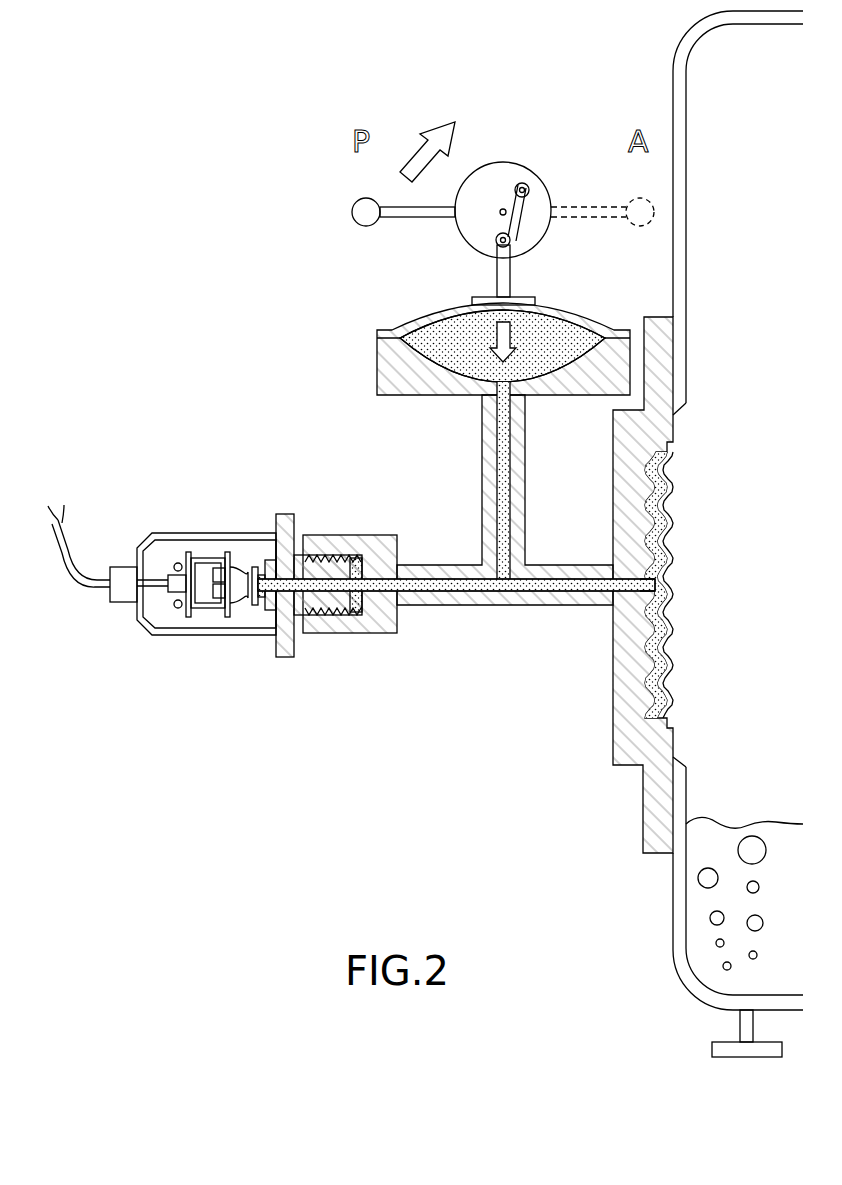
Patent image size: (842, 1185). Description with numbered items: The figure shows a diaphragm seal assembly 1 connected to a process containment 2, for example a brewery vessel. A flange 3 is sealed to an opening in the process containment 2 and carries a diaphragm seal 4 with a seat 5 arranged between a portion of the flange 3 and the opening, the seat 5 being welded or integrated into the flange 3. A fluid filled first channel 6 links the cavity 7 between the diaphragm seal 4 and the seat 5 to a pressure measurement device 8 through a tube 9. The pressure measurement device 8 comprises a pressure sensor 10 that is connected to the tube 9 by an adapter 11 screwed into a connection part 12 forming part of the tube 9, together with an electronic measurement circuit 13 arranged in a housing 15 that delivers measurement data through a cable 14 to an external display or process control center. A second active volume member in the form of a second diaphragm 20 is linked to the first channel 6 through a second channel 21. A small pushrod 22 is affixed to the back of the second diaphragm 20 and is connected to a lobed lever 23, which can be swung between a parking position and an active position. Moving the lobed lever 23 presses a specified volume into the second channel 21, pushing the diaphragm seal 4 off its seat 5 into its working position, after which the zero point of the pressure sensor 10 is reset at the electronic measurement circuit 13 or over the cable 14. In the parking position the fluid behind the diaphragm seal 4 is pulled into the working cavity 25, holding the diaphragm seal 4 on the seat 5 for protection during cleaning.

The diaphragm seal assembly 1 is at (486, 688).
The process containment 2 is at (680, 905).
The flange 3 is at (640, 738).
The diaphragm seal 4 is at (672, 635).
The seat 5 is at (642, 639).
The first channel 6 is at (568, 580).
The cavity 7 is at (668, 585).
The pressure measurement device 8 is at (214, 470).
The tube 9 is at (440, 606).
The pressure sensor 10 is at (255, 606).
The adapter 11 is at (285, 516).
The connection part 12 is at (372, 536).
The electronic measurement circuit 13 is at (215, 590).
The cable 14 is at (78, 548).
The housing 15 is at (186, 555).
The second diaphragm 20 is at (440, 330).
The second channel 21 is at (497, 458).
The pushrod 22 is at (512, 268).
The lobed lever 23 is at (400, 210).
The working cavity 25 is at (460, 347).